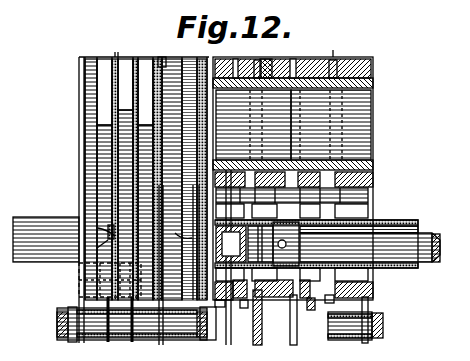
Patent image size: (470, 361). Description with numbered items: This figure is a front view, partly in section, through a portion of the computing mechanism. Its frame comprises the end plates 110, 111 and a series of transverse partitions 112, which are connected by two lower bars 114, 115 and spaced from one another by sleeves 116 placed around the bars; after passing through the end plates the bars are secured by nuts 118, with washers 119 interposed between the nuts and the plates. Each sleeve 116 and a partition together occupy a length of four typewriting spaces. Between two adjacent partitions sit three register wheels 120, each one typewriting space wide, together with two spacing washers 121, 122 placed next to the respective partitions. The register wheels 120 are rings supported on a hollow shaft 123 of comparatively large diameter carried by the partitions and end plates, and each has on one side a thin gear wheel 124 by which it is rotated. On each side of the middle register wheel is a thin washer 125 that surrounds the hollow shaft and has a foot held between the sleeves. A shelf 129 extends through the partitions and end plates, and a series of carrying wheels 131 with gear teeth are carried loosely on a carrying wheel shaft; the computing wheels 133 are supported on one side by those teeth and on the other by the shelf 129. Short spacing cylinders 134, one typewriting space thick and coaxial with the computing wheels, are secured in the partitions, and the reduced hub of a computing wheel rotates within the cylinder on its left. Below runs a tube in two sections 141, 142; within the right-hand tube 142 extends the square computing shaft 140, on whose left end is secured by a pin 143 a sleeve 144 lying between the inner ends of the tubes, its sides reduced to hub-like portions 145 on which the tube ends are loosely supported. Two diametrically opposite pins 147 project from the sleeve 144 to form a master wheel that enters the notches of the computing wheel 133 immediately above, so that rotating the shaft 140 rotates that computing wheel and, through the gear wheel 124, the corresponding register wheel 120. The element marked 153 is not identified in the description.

The end plate 110 is at (374, 72).
The end plate 111 is at (82, 82).
The transverse partition 112 is at (161, 344).
The lower bar 114 is at (210, 340).
The lower bar 115 is at (333, 340).
The sleeve 116 is at (105, 340).
The nut 118 is at (57, 330).
The washer 119 is at (72, 342).
The register wheel 120 is at (143, 60).
The spacing washer 121 is at (92, 57).
The spacing washer 122 is at (162, 57).
The hollow shaft 123 is at (253, 125).
The thin gear wheel 124 is at (116, 56).
The thin washer 125 is at (226, 60).
The shelf 129 is at (85, 278).
The carrying wheel 131 is at (95, 246).
The computing wheel 133 is at (168, 272).
The spacing cylinder 134 is at (180, 290).
The square computing shaft 140 is at (423, 258).
The tube section 141 is at (52, 217).
The tube section 142 is at (400, 213).
The pin 143 is at (231, 244).
The sleeve 144 is at (256, 242).
The hub-like portion 145 is at (326, 228).
The pin 147 is at (306, 162).
The stop 153 is at (244, 304).